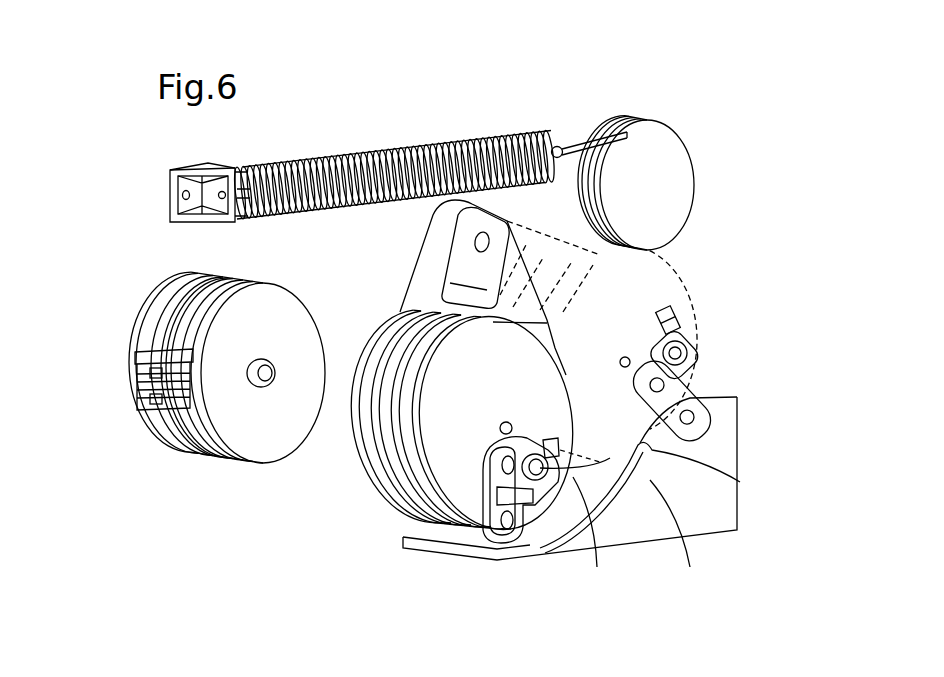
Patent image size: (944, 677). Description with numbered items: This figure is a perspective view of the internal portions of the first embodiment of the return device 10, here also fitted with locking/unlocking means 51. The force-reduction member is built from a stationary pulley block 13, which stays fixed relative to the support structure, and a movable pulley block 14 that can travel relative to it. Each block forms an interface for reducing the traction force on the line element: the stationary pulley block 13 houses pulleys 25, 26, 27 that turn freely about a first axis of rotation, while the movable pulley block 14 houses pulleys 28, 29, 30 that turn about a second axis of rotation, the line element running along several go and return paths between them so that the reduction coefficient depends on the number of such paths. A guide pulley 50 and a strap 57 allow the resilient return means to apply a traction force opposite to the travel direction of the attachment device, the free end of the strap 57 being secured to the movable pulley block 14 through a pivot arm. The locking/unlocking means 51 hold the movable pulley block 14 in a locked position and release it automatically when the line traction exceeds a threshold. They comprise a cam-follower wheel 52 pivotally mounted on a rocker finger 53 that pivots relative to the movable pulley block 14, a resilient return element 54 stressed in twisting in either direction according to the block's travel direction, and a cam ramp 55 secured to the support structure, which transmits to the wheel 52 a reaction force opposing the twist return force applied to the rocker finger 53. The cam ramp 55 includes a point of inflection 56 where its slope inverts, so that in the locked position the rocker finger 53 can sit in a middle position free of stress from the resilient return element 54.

The return device 10 is at (128, 243).
The stationary pulley block 13 is at (183, 427).
The movable pulley block 14 is at (570, 222).
The pulley 25 is at (148, 440).
The pulley 26 is at (163, 450).
The pulley 27 is at (190, 460).
The pulley 28 is at (370, 503).
The pulley 29 is at (385, 492).
The pulley 30 is at (458, 505).
The guide pulley 50 is at (680, 165).
The locking/unlocking means 51 is at (712, 350).
The cam-follower wheel 52 is at (700, 455).
The rocker finger 53 is at (700, 382).
The resilient return element 54 is at (686, 336).
The cam ramp 55 is at (652, 482).
The point of inflection 56 is at (688, 463).
The strap 57 is at (587, 138).